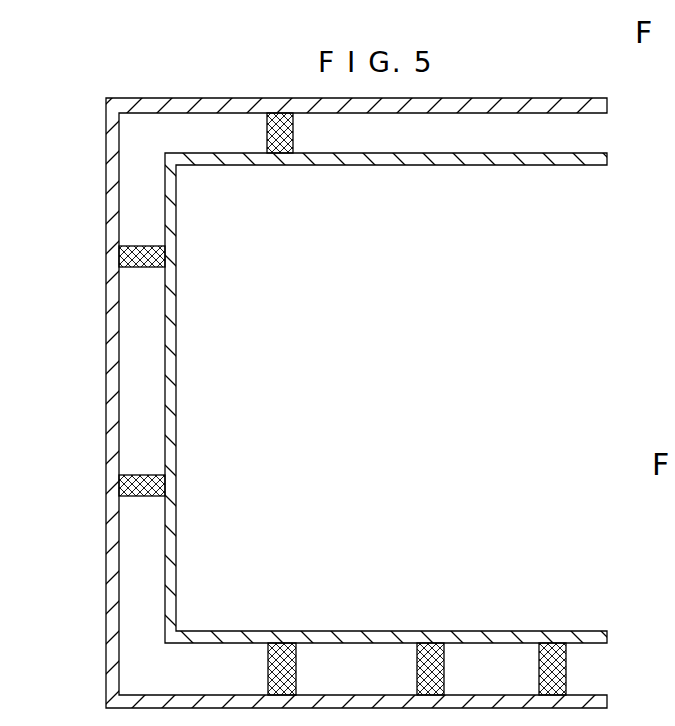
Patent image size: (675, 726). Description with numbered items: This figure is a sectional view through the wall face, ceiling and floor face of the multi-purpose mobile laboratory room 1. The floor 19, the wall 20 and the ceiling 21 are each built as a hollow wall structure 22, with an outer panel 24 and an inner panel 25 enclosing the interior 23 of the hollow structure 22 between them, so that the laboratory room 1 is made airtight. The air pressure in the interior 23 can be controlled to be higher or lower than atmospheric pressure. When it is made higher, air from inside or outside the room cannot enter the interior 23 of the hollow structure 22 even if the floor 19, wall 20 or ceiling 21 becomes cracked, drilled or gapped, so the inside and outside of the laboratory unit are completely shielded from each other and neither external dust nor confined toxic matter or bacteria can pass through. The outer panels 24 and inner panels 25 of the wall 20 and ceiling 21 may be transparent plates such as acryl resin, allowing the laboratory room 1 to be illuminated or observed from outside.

The laboratory room 1 is at (338, 403).
The floor 19 is at (307, 630).
The wall 20 is at (386, 398).
The ceiling 21 is at (383, 160).
The hollow wall structure 22 is at (311, 403).
The interior of hollow structure 23 is at (140, 342).
The outer panel 24 is at (107, 292).
The inner panel 25 is at (172, 288).